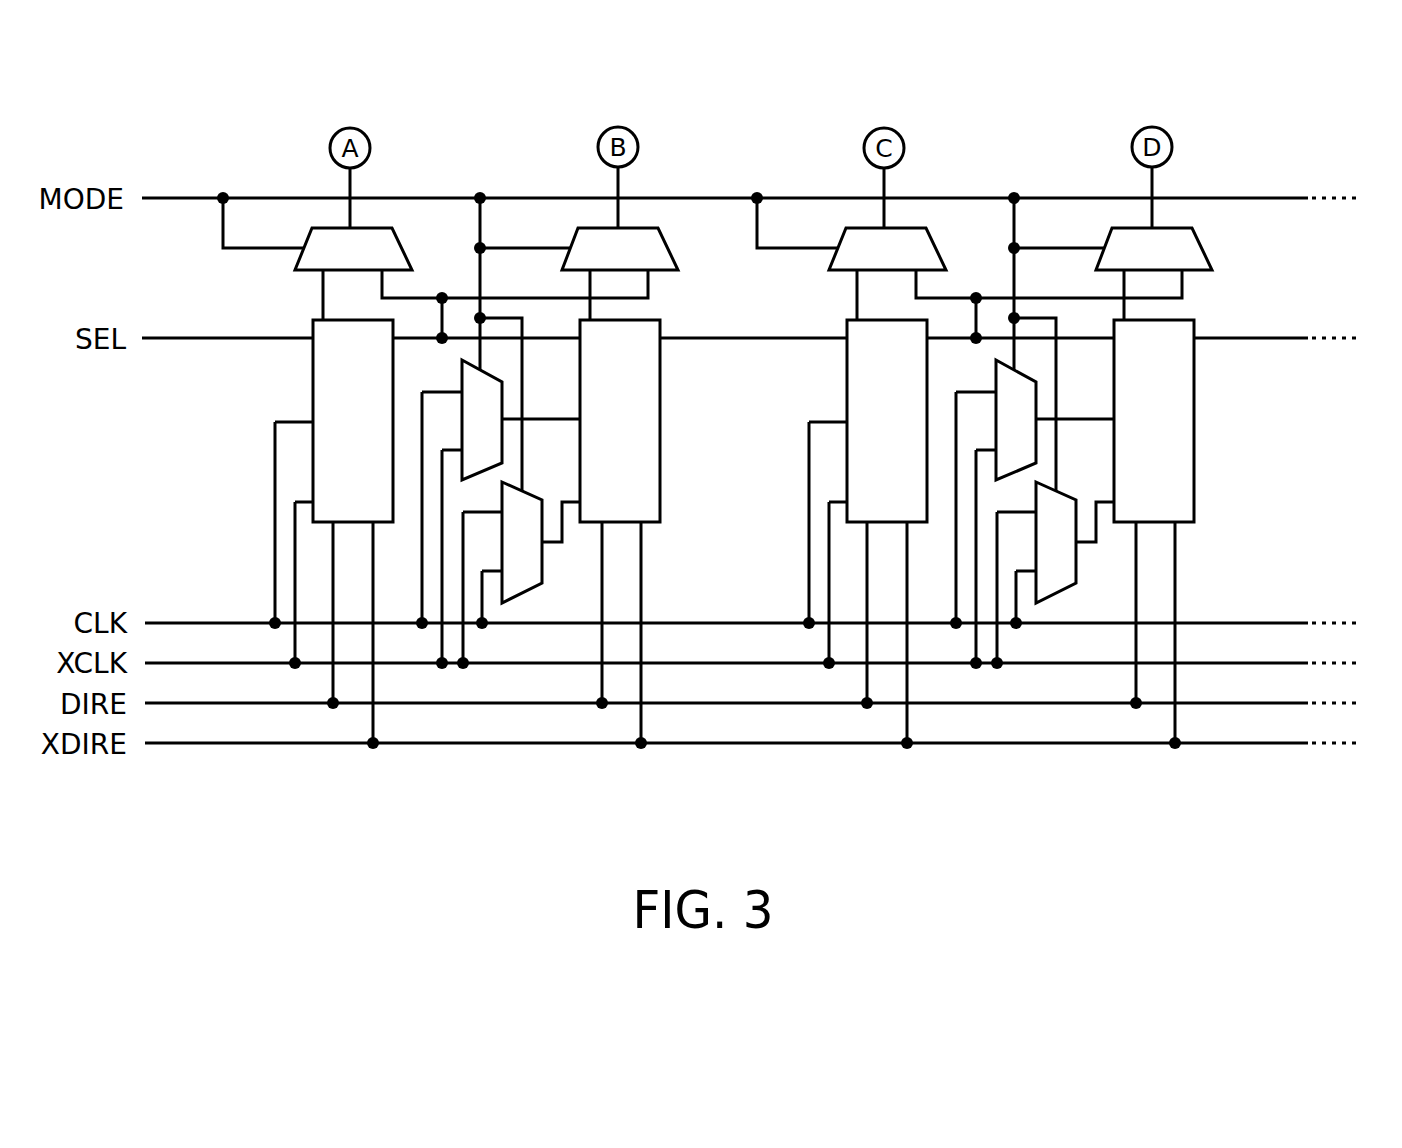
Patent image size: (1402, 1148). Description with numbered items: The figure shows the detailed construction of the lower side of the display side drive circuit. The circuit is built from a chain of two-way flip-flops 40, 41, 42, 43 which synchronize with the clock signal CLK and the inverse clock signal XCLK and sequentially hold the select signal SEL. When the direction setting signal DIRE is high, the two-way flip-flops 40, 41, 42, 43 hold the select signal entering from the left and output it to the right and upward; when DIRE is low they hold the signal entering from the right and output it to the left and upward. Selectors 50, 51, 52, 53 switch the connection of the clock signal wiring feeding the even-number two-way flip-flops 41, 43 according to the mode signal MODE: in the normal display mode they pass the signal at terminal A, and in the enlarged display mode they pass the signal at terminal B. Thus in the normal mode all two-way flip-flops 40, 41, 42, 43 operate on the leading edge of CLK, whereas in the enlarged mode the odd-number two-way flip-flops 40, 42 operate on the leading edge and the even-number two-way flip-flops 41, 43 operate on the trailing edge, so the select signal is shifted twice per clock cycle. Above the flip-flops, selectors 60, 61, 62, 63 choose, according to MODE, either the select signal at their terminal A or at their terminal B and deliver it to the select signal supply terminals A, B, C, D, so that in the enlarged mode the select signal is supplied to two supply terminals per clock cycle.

The two-way flip-flop 40 is at (312, 383).
The two-way flip-flop 41 is at (662, 380).
The two-way flip-flop 42 is at (845, 380).
The two-way flip-flop 43 is at (1196, 380).
The selector 50 is at (459, 370).
The selector 51 is at (543, 562).
The selector 52 is at (993, 370).
The selector 53 is at (1077, 562).
The selector 60 is at (396, 248).
The selector 61 is at (664, 248).
The selector 62 is at (930, 248).
The selector 63 is at (1198, 248).